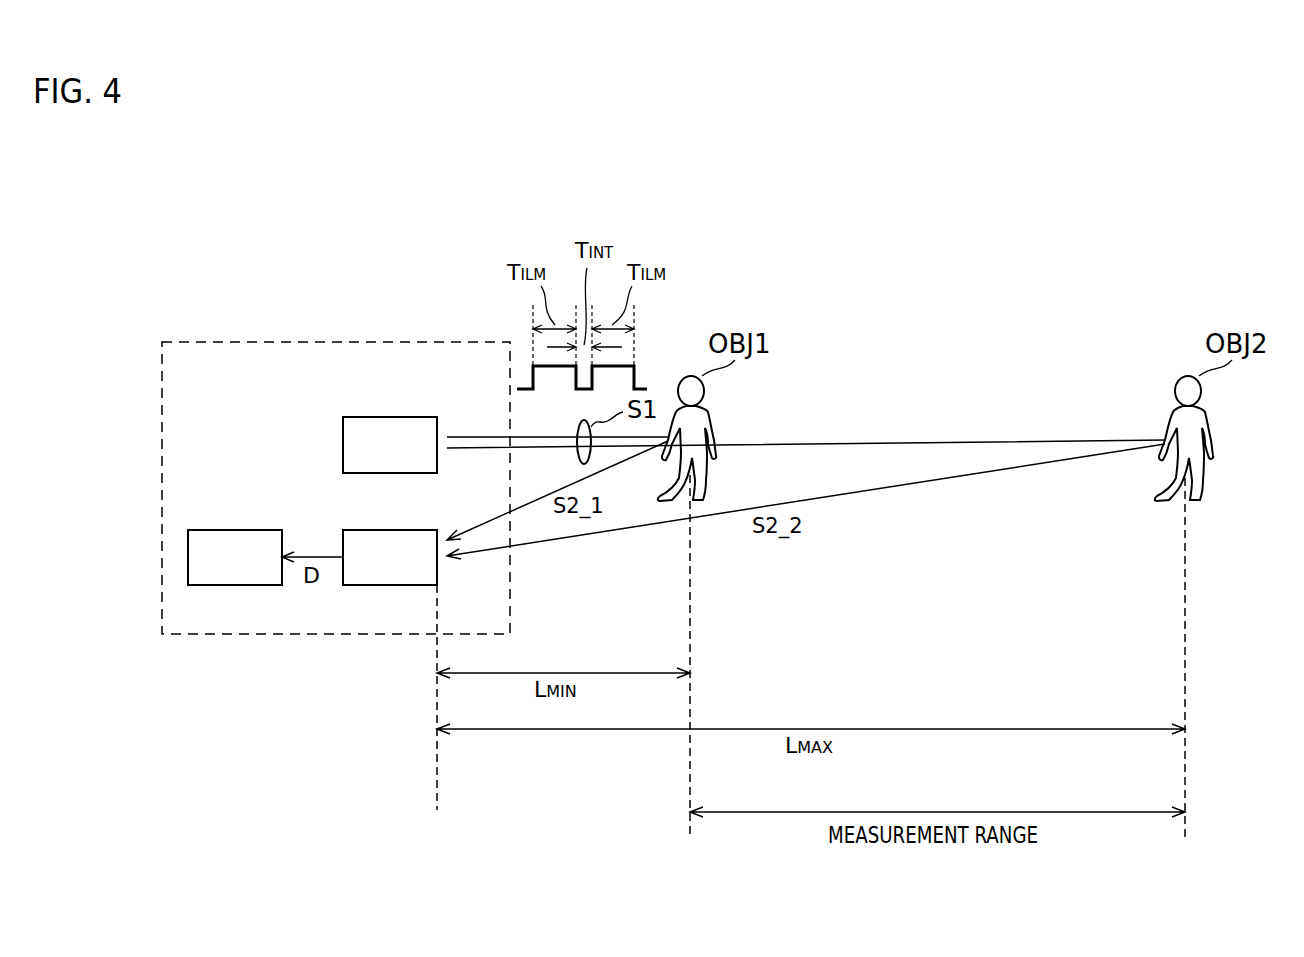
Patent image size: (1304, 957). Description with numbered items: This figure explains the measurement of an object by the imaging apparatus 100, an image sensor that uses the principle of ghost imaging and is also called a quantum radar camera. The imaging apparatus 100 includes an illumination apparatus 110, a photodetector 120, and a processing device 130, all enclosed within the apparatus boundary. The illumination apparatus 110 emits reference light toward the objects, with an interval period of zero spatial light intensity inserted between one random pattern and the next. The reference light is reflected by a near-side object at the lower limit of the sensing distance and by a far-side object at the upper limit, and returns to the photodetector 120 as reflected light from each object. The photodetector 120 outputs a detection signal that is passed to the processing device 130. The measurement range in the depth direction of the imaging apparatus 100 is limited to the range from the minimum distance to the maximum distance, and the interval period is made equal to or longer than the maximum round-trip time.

The imaging apparatus 100 is at (348, 342).
The illumination apparatus 110 is at (388, 417).
The photodetector 120 is at (388, 530).
The processing device 130 is at (233, 530).